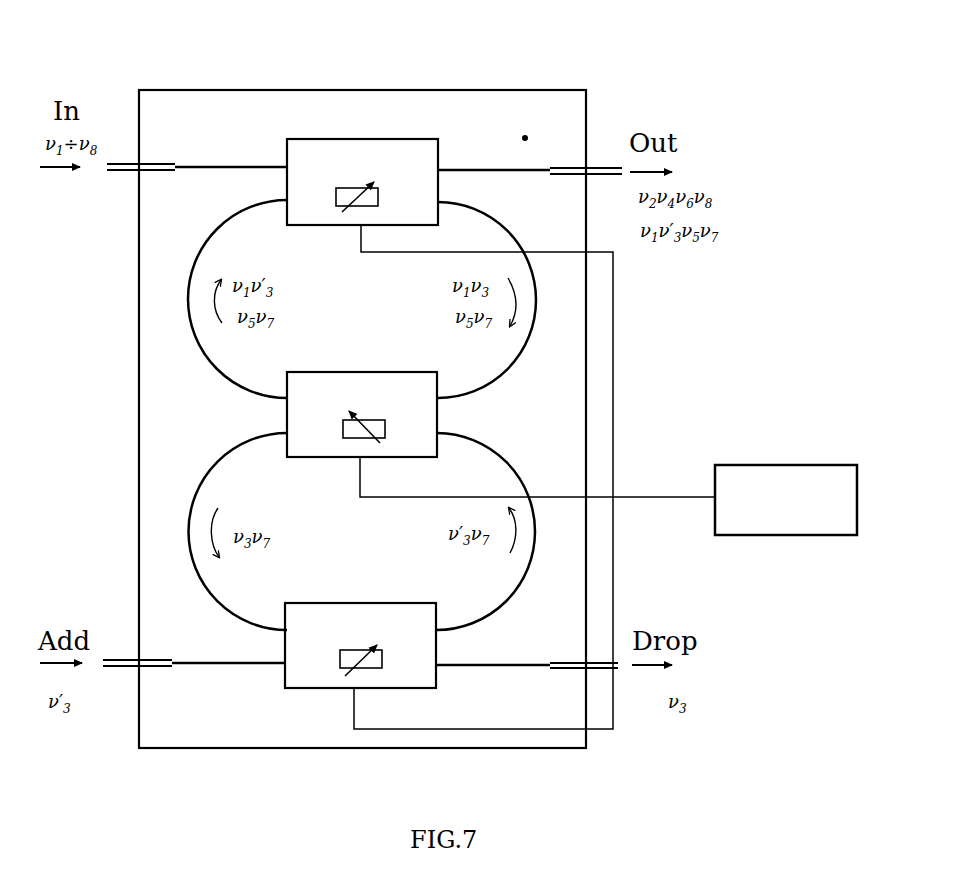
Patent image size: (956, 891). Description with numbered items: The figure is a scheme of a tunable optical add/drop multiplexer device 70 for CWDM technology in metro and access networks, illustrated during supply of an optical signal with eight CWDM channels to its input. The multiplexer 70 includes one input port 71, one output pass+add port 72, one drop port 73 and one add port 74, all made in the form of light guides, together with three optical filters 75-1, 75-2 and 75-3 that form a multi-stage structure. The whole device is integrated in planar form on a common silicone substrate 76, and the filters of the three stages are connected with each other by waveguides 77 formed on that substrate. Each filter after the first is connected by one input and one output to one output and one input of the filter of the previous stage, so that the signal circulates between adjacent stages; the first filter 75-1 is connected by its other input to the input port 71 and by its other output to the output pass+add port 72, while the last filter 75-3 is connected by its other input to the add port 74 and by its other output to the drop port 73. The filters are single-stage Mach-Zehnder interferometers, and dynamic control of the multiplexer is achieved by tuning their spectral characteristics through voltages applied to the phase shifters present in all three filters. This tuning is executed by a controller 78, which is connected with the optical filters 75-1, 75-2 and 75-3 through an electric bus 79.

The tunable optical add/drop multiplexer device 70 is at (238, 58).
The input port 71 is at (141, 176).
The output pass+add port 72 is at (597, 178).
The drop port 73 is at (568, 670).
The add port 74 is at (136, 669).
The first optical filter 75-1 is at (423, 121).
The second optical filter 75-2 is at (390, 371).
The third optical filter 75-3 is at (378, 603).
The silicone substrate 76 is at (527, 136).
The waveguides 77 is at (270, 201).
The controller 78 is at (786, 500).
The electric bus 79 is at (646, 497).